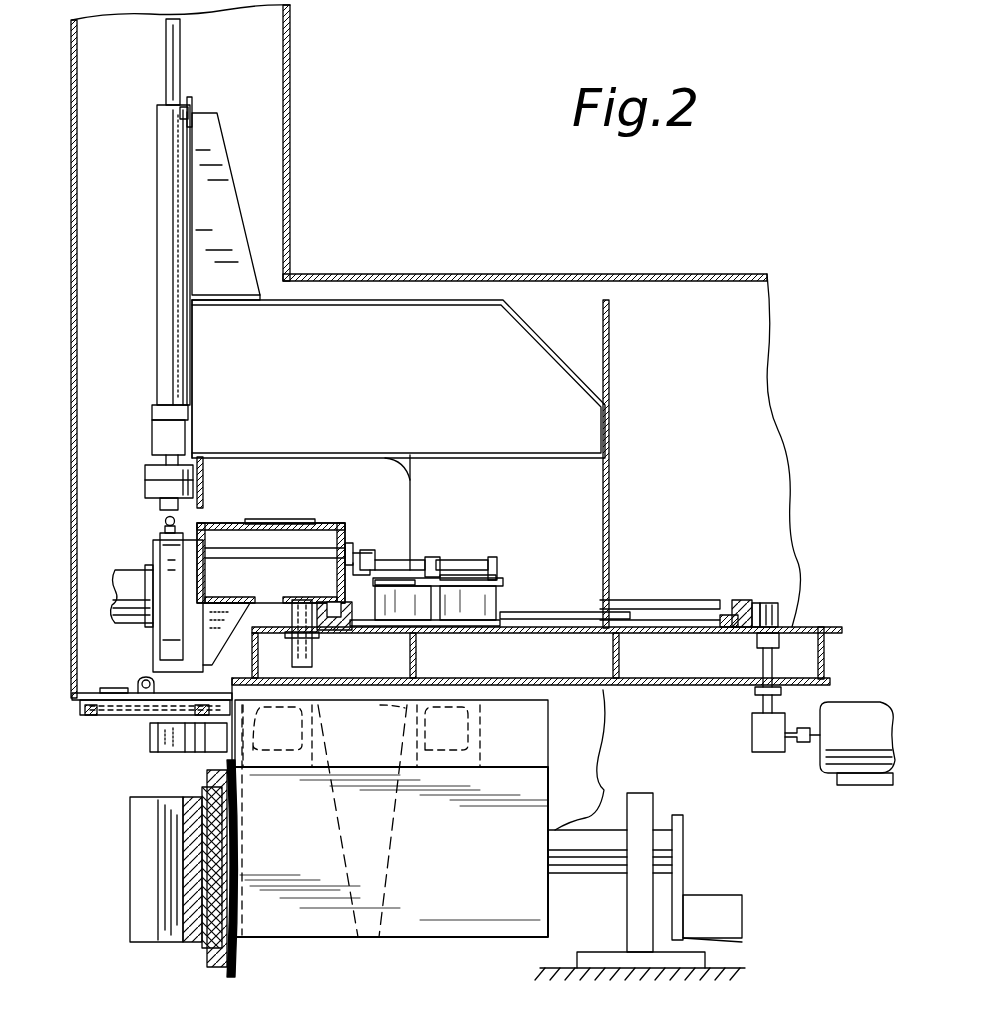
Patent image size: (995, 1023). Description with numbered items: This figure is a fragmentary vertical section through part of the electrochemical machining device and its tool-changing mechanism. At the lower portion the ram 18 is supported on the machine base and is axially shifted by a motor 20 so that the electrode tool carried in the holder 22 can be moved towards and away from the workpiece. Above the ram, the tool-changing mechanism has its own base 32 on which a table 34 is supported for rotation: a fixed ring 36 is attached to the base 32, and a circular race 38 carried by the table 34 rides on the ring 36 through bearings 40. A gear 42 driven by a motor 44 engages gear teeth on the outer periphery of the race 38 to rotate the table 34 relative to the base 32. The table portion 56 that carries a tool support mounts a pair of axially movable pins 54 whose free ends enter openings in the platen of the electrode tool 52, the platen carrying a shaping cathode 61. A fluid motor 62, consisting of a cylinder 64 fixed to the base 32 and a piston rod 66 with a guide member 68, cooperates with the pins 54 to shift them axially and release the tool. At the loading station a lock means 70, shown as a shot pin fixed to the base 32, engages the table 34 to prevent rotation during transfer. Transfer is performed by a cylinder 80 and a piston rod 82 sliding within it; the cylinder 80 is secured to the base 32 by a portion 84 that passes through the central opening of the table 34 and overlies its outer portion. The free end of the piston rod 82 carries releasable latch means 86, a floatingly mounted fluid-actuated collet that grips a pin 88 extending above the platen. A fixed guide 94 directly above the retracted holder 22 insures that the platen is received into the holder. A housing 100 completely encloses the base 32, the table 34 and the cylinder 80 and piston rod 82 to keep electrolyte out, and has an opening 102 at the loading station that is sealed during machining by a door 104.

The ram 18 is at (478, 856).
The motor 20 is at (708, 905).
The holder 22 is at (122, 848).
The base 32 is at (640, 685).
The table 34 is at (744, 598).
The fixed ring 36 is at (723, 620).
The circular race 38 is at (742, 614).
The bearings 40 is at (742, 633).
The gear 42 is at (776, 616).
The motor 44 is at (853, 710).
The electrode tool 52 is at (118, 560).
The pins 54 is at (295, 548).
The portion of the table 56 is at (222, 523).
The shaping cathode 61 is at (122, 618).
The fluid motor 62 is at (486, 547).
The cylinder 64 is at (458, 566).
The piston rod 66 is at (421, 560).
The guide member 68 is at (375, 552).
The lock means 70 is at (312, 652).
The cylinder 80 is at (166, 196).
The piston rod 82 is at (152, 428).
The portion 84 is at (246, 295).
The releasable latch means 86 is at (128, 478).
The pin 88 is at (164, 521).
The fixed guide 94 is at (150, 740).
The housing 100 is at (478, 274).
The opening 102 is at (118, 690).
The door 104 is at (118, 713).